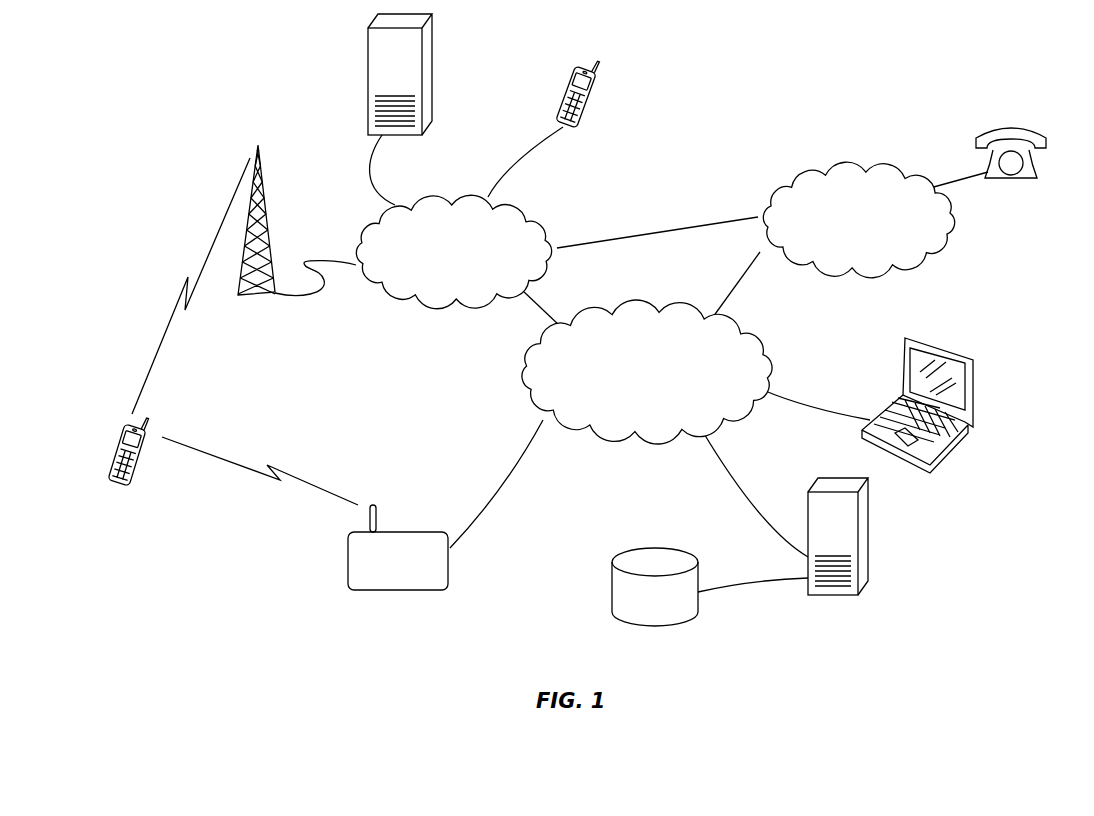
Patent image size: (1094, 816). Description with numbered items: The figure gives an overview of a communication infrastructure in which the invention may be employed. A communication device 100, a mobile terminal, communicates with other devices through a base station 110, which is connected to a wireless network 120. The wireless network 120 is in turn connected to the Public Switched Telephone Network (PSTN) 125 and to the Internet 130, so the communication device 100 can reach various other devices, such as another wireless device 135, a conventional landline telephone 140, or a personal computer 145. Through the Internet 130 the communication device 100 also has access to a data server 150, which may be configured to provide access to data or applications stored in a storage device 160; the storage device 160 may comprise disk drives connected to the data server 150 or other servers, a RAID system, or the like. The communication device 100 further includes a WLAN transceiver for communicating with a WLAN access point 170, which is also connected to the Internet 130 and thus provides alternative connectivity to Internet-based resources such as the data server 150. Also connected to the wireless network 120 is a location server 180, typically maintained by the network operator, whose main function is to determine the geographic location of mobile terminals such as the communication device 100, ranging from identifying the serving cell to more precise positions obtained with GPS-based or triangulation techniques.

The communication device 100 is at (132, 476).
The base station 110 is at (268, 222).
The wireless network 120 is at (439, 279).
The Public Switched Telephone Network (PSTN) 125 is at (843, 240).
The Internet 130 is at (631, 392).
The wireless device 135 is at (583, 108).
The conventional landline telephone 140 is at (1016, 128).
The personal computer 145 is at (973, 378).
The data server 150 is at (868, 513).
The storage device 160 is at (700, 607).
The WLAN access point 170 is at (420, 590).
The location server 180 is at (432, 50).